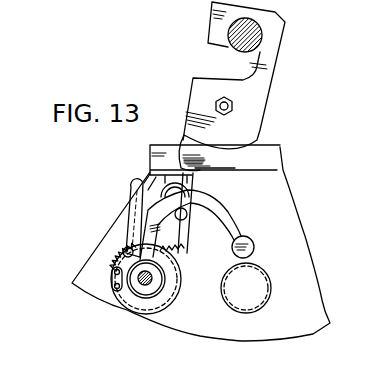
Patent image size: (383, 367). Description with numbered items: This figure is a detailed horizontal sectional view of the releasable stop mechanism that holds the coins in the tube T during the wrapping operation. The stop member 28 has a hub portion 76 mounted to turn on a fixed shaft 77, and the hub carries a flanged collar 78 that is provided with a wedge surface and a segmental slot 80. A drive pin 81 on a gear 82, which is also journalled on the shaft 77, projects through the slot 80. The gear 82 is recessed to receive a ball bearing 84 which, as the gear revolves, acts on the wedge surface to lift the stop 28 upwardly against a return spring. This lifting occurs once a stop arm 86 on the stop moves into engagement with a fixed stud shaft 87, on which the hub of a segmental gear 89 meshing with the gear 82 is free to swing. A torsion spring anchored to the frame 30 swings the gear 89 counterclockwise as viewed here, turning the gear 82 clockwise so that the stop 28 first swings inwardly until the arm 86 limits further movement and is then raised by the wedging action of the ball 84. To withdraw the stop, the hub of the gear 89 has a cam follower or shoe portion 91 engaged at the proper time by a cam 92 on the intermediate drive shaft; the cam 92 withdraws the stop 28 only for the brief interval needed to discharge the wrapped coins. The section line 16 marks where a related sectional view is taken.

The section line 16 is at (72, 162).
The stop member 28 is at (235, 213).
The frame 30 is at (298, 209).
The hub portion 76 is at (163, 272).
The fixed shaft 77 is at (151, 280).
The flanged collar 78 is at (165, 297).
The segmental slot 80 is at (112, 272).
The drive pin 81 is at (112, 286).
The gear 82 is at (122, 252).
The ball bearing 84 is at (126, 251).
The stop arm 86 is at (128, 197).
The fixed stud shaft 87 is at (192, 188).
The segmental gear 89 is at (143, 180).
The cam follower or shoe portion 91 is at (265, 146).
The cam 92 is at (265, 110).
The tube T is at (268, 301).